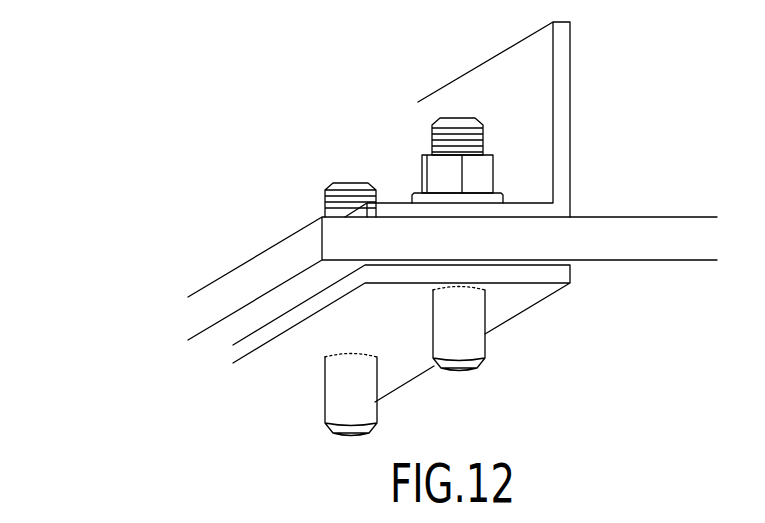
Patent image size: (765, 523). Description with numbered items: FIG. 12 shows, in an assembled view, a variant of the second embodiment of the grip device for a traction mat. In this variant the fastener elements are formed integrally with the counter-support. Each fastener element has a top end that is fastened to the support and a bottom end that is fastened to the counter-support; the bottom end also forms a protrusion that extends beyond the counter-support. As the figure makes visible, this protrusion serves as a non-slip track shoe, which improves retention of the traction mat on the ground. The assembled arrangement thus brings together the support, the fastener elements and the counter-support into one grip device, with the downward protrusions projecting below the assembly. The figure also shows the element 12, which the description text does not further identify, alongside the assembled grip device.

The board / base plate 12 is at (617, 228).